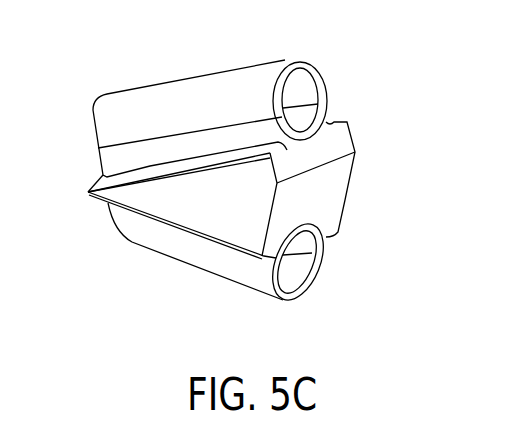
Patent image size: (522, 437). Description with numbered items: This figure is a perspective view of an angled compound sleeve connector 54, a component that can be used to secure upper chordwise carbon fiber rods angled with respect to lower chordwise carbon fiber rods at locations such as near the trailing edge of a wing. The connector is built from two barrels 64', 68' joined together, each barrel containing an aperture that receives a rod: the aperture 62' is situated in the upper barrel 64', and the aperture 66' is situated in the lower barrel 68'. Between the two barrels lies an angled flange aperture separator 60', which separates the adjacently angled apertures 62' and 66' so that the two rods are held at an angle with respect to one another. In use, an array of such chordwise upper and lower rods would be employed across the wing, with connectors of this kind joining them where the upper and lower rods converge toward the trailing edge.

The angled compound sleeve connector 54 is at (241, 181).
The angled flange aperture separator 60' is at (221, 190).
The aperture 62' is at (333, 96).
The barrel 64' is at (190, 96).
The aperture 66' is at (321, 263).
The barrel 68' is at (195, 264).